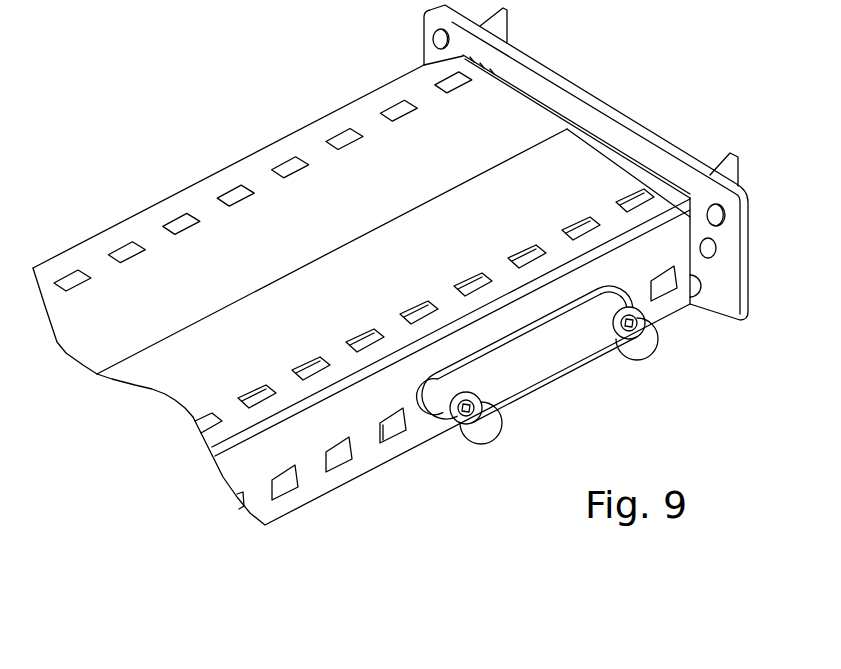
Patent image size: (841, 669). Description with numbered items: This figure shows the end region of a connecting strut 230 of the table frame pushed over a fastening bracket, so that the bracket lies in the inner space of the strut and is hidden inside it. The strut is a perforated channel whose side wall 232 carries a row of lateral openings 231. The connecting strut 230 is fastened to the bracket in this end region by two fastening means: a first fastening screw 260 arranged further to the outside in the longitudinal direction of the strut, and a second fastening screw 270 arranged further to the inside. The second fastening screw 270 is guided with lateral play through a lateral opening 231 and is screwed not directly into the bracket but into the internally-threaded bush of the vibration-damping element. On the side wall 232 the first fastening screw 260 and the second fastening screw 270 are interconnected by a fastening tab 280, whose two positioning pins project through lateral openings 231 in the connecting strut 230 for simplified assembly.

The connecting strut 230 is at (207, 197).
The lateral opening 231 is at (283, 485).
The side wall 232 is at (240, 465).
The fastening screw 260 is at (622, 338).
The fastening screw 270 is at (460, 417).
The fastening tab 280 is at (545, 365).